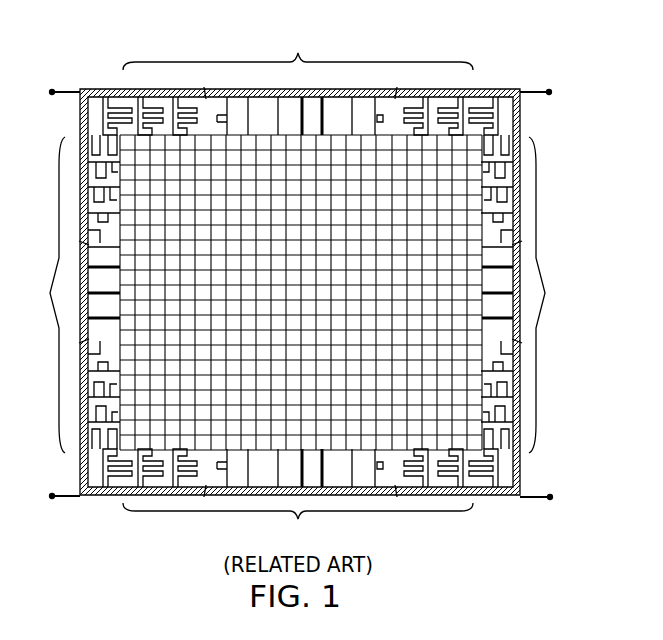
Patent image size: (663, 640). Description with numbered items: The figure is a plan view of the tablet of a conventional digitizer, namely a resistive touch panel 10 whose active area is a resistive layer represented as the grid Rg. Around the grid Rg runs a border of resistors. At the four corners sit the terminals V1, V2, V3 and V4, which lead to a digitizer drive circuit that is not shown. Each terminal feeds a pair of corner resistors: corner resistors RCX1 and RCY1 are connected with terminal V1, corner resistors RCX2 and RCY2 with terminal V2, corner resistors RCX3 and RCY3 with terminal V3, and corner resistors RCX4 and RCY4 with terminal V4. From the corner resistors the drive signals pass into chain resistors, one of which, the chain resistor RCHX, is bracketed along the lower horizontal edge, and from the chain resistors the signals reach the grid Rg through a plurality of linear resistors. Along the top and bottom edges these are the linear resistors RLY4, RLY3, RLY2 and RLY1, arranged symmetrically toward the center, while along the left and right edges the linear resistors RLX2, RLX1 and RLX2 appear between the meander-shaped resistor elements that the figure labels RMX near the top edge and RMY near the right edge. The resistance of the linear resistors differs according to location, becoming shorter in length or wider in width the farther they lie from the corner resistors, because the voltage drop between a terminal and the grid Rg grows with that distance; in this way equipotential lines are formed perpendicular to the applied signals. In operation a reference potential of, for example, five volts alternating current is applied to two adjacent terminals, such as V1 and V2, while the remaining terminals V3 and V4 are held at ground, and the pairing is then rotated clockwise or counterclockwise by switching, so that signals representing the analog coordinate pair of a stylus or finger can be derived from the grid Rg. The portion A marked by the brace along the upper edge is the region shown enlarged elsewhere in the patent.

The resistive touch panel 10 is at (507, 62).
The portion A is at (331, 78).
The resistive layer (grid resistor) Rg is at (452, 250).
The terminal V1 is at (55, 93).
The terminal V2 is at (545, 93).
The terminal V3 is at (55, 496).
The terminal V4 is at (545, 497).
The corner resistor RCX1 is at (190, 85).
The corner resistor RCX2 is at (410, 85).
The corner resistor RCX3 is at (190, 500).
The corner resistor RCX4 is at (410, 500).
The corner resistor RCY1 is at (69, 194).
The corner resistor RCY2 is at (532, 194).
The corner resistor RCY3 is at (70, 389).
The corner resistor RCY4 is at (532, 389).
The chain resistor RCHX is at (298, 520).
The horizontal meander resistor RMX is at (300, 292).
The vertical meander resistor RMY is at (300, 292).
The linear resistor RLY1 is at (312, 292).
The linear resistor RLY2 is at (315, 292).
The linear resistor RLY3 is at (311, 292).
The linear resistor RLY4 is at (307, 292).
The linear resistor RLX1 is at (300, 280).
The linear resistor RLX2 is at (300, 282).